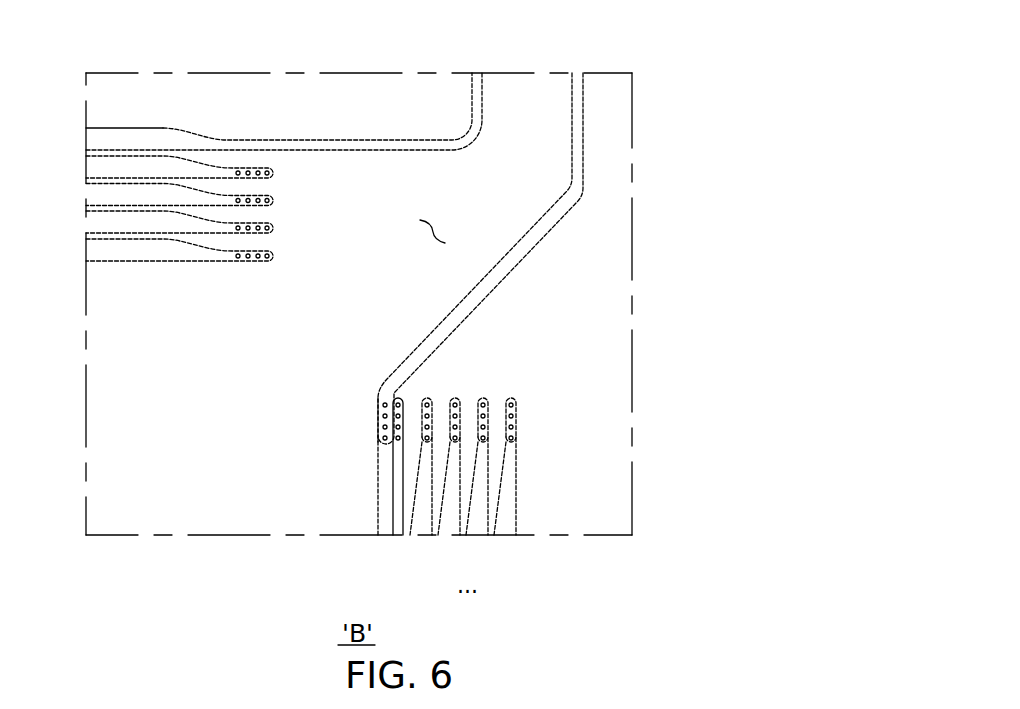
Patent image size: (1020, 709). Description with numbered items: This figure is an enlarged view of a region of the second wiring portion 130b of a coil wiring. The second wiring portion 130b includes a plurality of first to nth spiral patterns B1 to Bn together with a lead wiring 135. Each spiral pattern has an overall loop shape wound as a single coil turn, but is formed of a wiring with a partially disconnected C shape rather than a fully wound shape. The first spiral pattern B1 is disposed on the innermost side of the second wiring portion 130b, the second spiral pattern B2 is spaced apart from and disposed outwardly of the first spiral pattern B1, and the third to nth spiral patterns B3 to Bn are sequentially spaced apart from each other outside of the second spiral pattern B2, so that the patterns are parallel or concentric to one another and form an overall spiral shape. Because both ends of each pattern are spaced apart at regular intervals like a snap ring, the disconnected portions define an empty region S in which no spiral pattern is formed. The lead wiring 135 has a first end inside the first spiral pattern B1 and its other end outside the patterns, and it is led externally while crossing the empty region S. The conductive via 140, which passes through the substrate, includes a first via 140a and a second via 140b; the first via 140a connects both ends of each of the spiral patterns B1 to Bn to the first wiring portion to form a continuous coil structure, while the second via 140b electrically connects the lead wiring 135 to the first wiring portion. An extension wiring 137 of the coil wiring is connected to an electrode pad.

The extension wiring 137 is at (346, 145).
The empty region S is at (433, 232).
The lead wiring 135 is at (583, 135).
The conductive via 140 is at (218, 388).
The first via 140a is at (393, 445).
The second via 140b is at (387, 418).
The second wiring portion 130b is at (531, 500).
The first spiral pattern B1 is at (392, 528).
The second spiral pattern B2 is at (419, 528).
The third spiral pattern B3 is at (448, 528).
The nth spiral pattern Bn is at (502, 528).